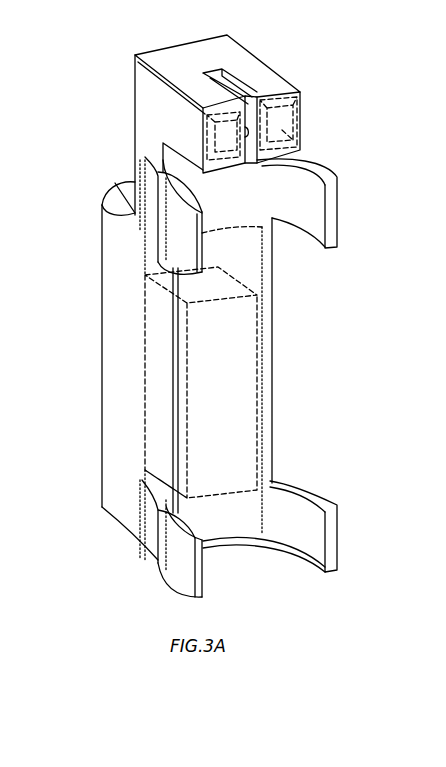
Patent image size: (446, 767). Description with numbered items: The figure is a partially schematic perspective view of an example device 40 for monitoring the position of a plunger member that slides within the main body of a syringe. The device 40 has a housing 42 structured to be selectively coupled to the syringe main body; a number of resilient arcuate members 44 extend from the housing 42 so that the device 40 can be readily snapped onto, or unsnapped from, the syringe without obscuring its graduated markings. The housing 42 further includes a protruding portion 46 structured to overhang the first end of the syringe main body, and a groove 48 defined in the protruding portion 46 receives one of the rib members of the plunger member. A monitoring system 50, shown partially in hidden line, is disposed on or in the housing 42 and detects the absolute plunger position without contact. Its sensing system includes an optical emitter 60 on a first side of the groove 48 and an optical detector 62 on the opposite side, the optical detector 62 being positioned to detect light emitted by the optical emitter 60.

The device 40 is at (86, 268).
The housing 42 is at (113, 313).
The resilient arcuate members 44 is at (178, 238).
The protruding portion 46 is at (328, 108).
The groove 48 is at (240, 90).
The monitoring system 50 is at (145, 372).
The optical emitter 60 is at (300, 137).
The optical detector 62 is at (228, 140).